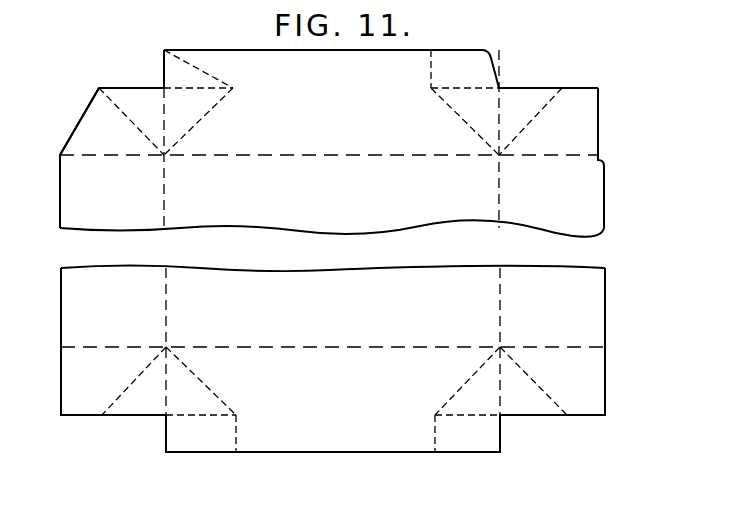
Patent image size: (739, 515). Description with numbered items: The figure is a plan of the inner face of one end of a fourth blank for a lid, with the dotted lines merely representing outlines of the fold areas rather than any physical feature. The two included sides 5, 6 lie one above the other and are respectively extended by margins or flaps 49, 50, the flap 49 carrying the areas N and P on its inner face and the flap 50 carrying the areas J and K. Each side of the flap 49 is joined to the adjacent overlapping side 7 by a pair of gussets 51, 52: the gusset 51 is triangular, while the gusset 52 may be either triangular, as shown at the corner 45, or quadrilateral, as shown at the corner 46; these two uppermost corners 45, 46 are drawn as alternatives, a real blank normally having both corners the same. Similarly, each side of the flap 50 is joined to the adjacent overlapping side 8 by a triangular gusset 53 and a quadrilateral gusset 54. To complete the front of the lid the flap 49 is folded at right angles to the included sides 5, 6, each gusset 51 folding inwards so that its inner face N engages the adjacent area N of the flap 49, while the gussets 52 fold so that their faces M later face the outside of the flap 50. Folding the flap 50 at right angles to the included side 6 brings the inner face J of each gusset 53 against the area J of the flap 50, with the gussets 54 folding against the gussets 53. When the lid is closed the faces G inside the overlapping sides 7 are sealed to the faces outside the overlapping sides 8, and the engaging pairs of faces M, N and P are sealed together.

The included side 5 is at (296, 207).
The included side 6 is at (338, 298).
The overlapping side 7 is at (73, 192).
The overlapping side 8 is at (81, 298).
The corner 45 is at (131, 66).
The corner 46 is at (505, 79).
The flap 49 is at (331, 60).
The flap 50 is at (309, 437).
The gusset 51 is at (122, 97).
The gusset 52 is at (81, 131).
The gusset 53 is at (135, 410).
The gusset 54 is at (85, 372).